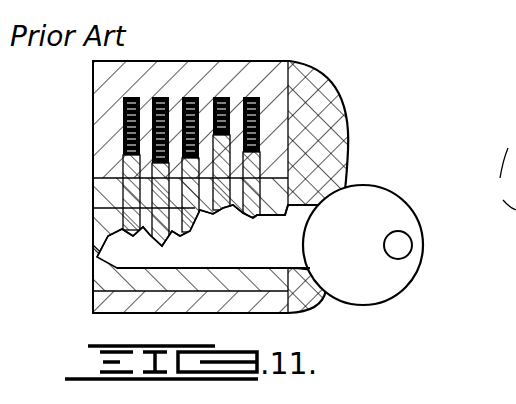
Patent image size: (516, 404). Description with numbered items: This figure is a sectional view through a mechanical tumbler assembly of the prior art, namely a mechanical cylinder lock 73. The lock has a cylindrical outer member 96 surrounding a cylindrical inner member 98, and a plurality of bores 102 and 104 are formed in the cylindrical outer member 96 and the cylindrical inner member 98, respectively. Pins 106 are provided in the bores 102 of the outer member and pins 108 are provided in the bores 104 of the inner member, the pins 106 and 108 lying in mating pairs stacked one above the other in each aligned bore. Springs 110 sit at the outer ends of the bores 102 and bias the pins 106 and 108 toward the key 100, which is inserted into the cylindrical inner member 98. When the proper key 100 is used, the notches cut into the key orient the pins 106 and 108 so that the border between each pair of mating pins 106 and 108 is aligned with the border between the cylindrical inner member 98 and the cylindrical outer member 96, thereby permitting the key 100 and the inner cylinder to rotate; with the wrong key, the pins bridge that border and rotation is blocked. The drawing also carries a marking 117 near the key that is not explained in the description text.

The mechanical cylinder lock 73 is at (192, 62).
The cylindrical outer member 96 is at (234, 68).
The springs 110 is at (288, 67).
The bores 102 is at (307, 97).
The cylindrical inner member 98 is at (343, 137).
The key 100 is at (390, 207).
The pins 106 is at (123, 163).
The pins 108 is at (93, 208).
The bores 104 is at (253, 213).
The key shoulder 117 is at (244, 220).